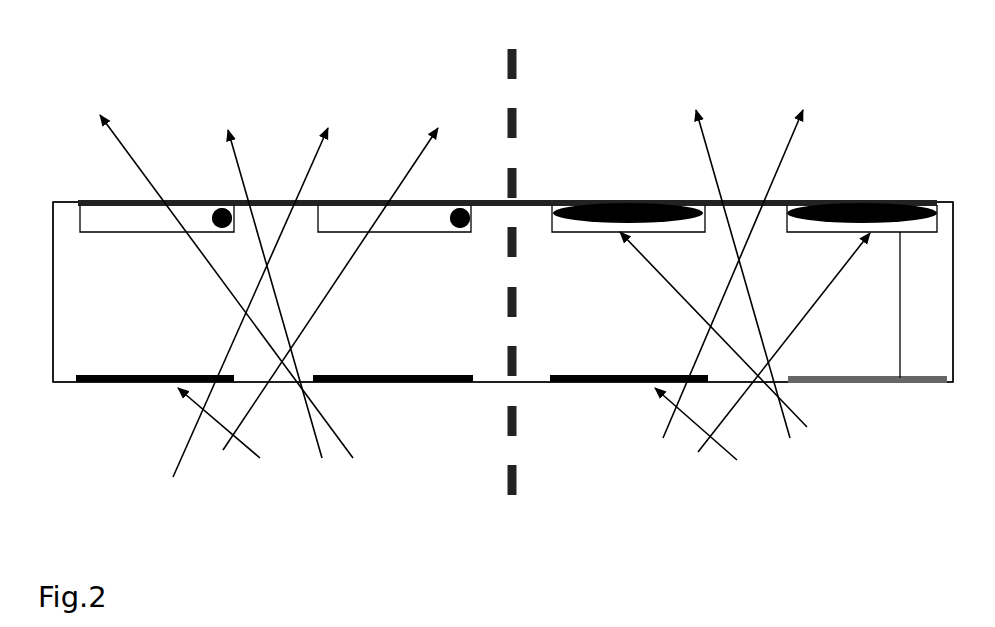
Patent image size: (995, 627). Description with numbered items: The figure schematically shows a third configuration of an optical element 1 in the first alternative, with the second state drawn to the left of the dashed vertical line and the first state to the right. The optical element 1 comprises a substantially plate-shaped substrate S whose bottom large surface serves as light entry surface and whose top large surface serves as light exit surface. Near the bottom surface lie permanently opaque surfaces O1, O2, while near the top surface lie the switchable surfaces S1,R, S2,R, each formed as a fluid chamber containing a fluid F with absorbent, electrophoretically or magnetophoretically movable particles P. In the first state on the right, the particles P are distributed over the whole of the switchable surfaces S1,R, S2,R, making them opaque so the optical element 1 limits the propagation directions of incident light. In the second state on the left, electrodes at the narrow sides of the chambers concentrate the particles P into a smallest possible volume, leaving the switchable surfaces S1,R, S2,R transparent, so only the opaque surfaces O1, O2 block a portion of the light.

The optical element 1 is at (98, 172).
The substrate S is at (113, 316).
The fluid F is at (128, 218).
The first switchable surface with fluid chamber S1,R is at (155, 218).
The second switchable surface with fluid chamber S2,R is at (422, 218).
The particles P is at (220, 218).
The first opaque surface O1 is at (108, 383).
The second opaque surface O2 is at (368, 383).